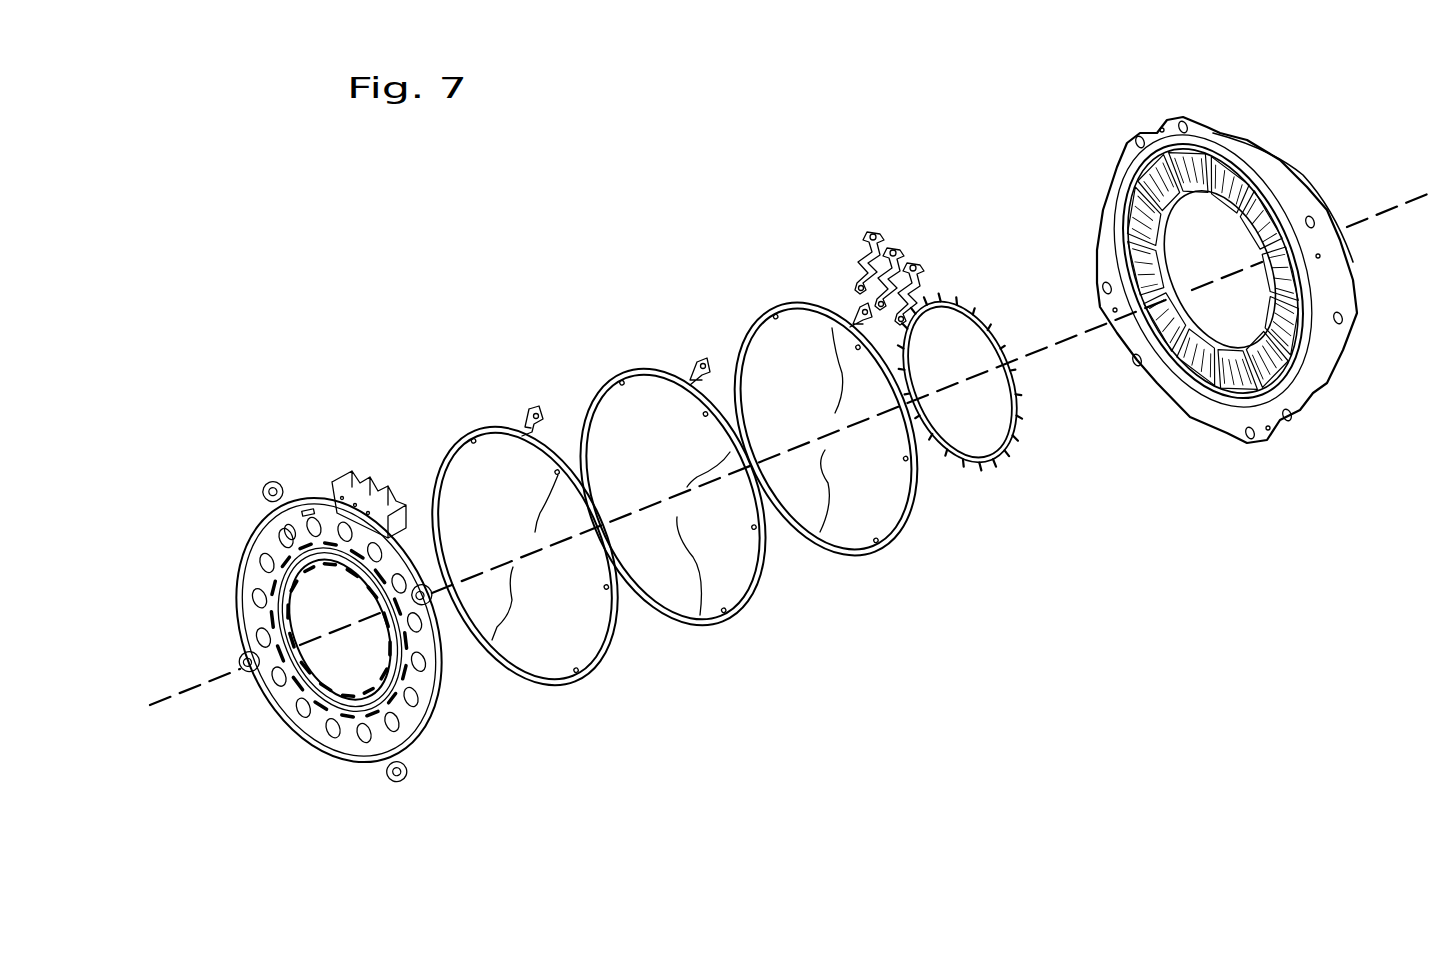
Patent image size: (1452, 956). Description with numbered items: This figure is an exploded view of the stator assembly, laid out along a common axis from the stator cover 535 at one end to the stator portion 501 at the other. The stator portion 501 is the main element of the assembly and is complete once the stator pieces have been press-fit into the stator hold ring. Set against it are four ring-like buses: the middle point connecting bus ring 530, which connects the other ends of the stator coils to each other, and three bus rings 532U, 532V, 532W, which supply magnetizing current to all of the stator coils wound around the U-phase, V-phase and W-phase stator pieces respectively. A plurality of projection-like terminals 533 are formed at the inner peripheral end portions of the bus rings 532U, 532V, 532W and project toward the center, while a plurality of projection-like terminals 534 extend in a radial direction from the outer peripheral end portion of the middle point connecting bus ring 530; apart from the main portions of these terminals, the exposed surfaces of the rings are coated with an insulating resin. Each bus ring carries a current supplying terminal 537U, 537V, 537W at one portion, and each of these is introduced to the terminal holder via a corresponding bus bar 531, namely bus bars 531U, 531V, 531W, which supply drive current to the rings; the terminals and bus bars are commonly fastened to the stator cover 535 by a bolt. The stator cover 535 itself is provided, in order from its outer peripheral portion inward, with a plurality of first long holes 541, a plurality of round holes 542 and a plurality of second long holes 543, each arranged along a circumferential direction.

The stator portion 501 is at (1341, 393).
The middle point connecting bus ring 530 is at (1006, 415).
The bus bar 531 is at (807, 239).
The bus bar 531U is at (867, 232).
The bus bar 531V is at (902, 250).
The bus bar 531W is at (916, 262).
The bus ring 532U is at (601, 663).
The bus ring 532V is at (744, 609).
The bus ring 532W is at (877, 550).
The projection-like terminals 533 is at (672, 484).
The projection-like terminals 534 is at (1015, 390).
The stator cover 535 is at (427, 712).
The current supplying terminal 537U is at (531, 410).
The current supplying terminal 537V is at (699, 362).
The current supplying terminal 537W is at (860, 307).
The first long holes 541 is at (310, 508).
The round holes 542 is at (292, 530).
The second long holes 543 is at (386, 550).